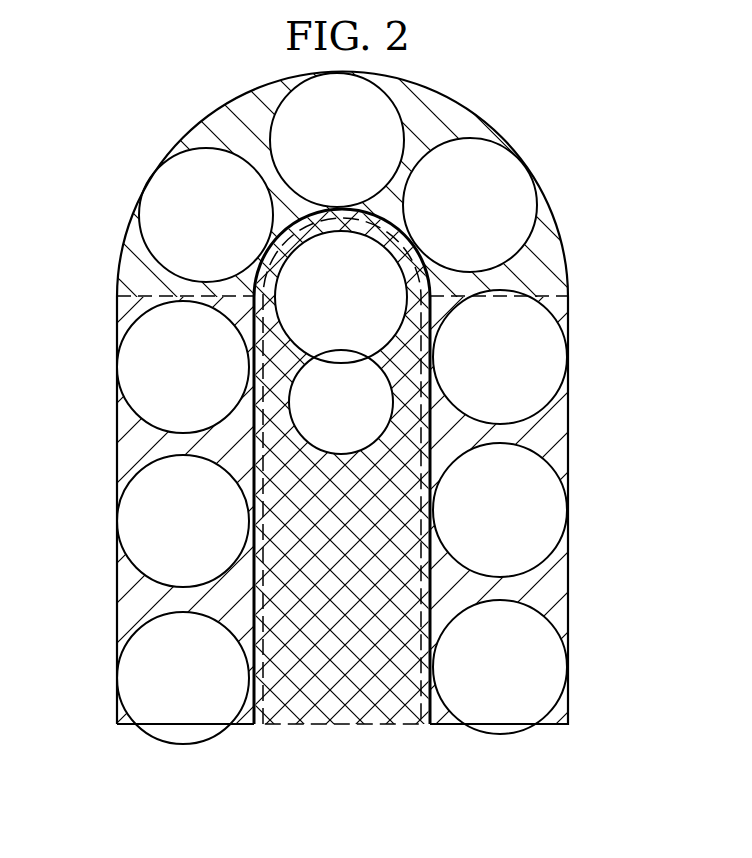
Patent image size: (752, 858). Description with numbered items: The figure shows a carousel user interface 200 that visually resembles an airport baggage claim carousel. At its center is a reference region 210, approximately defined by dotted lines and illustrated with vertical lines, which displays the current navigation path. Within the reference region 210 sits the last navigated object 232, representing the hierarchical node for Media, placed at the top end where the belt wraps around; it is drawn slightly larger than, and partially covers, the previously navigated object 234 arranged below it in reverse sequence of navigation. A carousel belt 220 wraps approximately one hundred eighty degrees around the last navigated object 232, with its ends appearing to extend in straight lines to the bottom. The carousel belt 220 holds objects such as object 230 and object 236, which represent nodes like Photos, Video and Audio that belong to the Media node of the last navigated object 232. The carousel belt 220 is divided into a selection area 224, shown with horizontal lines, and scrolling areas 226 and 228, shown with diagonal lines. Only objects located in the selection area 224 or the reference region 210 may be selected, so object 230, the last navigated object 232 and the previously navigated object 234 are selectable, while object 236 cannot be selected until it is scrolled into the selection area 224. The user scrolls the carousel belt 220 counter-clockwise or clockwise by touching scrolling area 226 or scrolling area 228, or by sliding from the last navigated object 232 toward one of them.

The carousel user interface 200 is at (344, 398).
The reference region 210 is at (327, 714).
The carousel belt region 220 is at (492, 116).
The selection area 224 is at (215, 122).
The scrolling area 226 is at (127, 606).
The scrolling area 228 is at (557, 418).
The object 230 is at (155, 190).
The last navigated object 232 is at (363, 328).
The previously navigated object 234 is at (363, 413).
The object 236 is at (125, 367).